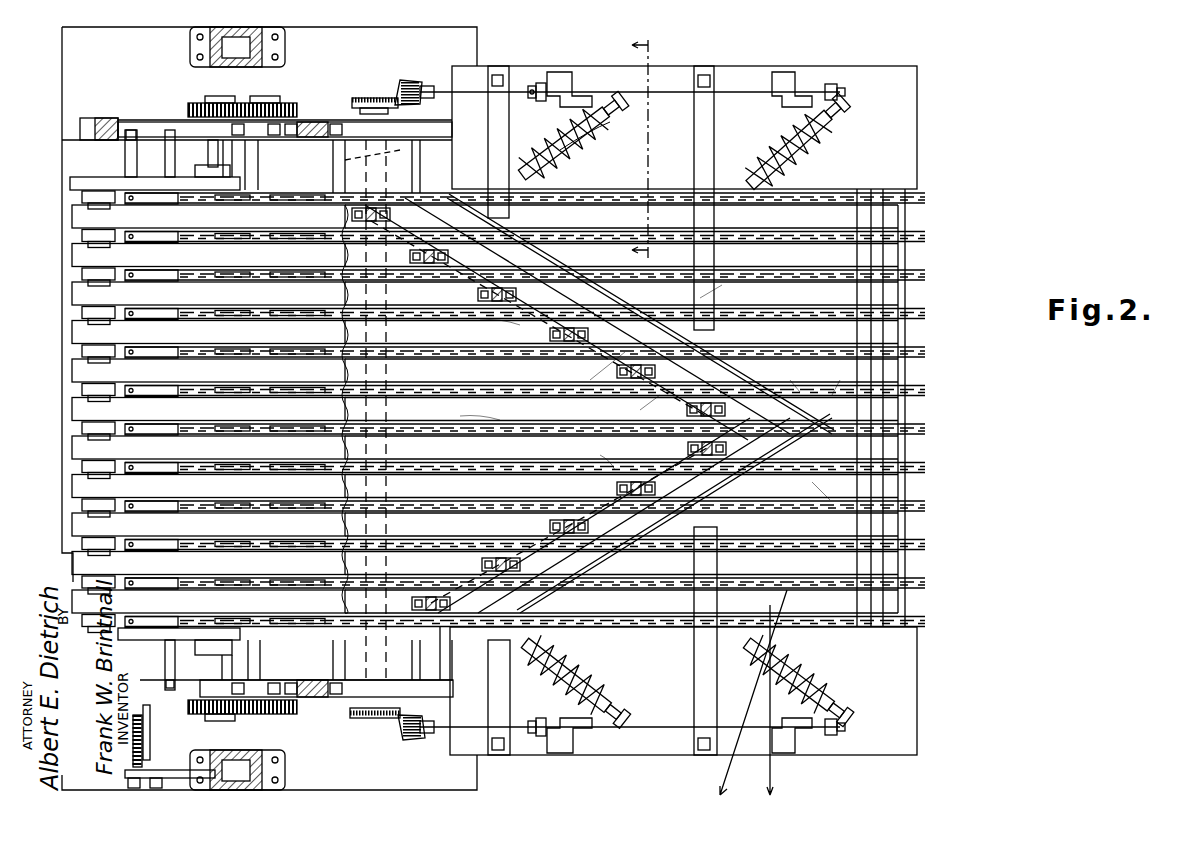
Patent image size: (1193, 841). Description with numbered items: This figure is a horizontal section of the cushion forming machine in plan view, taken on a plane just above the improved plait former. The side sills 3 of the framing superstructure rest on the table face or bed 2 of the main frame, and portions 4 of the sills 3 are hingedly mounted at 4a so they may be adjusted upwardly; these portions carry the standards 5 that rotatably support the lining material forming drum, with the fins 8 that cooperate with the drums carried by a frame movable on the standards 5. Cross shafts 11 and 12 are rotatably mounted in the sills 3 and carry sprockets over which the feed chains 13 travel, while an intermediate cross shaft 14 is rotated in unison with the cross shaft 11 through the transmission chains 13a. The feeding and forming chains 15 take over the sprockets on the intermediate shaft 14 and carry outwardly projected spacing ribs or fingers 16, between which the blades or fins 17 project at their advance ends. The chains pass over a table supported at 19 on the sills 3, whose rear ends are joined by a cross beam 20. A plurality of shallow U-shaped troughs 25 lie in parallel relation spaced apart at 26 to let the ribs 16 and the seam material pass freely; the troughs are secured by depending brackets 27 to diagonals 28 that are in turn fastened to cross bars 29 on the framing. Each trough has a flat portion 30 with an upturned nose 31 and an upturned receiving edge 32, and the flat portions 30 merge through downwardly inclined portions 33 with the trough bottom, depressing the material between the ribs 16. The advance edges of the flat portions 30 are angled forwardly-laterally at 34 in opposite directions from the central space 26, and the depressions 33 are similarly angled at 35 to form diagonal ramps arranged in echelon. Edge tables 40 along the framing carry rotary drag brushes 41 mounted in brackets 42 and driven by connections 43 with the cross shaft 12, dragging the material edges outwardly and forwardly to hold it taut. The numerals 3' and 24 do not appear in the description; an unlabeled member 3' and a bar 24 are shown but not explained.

The table face or bed 2 is at (470, 42).
The side sills 3 is at (150, 392).
The standard 3' is at (683, 295).
The portions of the sills 4 is at (410, 140).
The pivot mounting 4a is at (208, 115).
The standards 5 is at (312, 122).
The fins 8 is at (709, 408).
The cross shaft 11 is at (90, 170).
The cross shaft 12 is at (352, 160).
The feed chains 13 is at (78, 248).
The transmission chains 13a is at (80, 208).
The intermediate cross shaft 14 is at (208, 150).
The feeding and forming chains 15 is at (927, 268).
The spacing ribs or fingers 16 is at (928, 192).
The blades or fins 17 is at (210, 272).
The table support 19 is at (335, 152).
The cross beam 20 is at (440, 658).
The bars 24 is at (920, 322).
The shallow U-shaped troughs 25 is at (462, 455).
The space between troughs 26 is at (508, 345).
The depending brackets 27 is at (620, 490).
The diagonals 28 is at (465, 293).
The cross bars 29 is at (490, 158).
The flat portion 30 is at (780, 405).
The upturned nose 31 is at (822, 420).
The upturned receiving edge 32 is at (830, 455).
The downwardly inclined portions or depressions 33 is at (740, 345).
The angled advance edge 34 is at (655, 390).
The angled inclined portion 35 is at (668, 348).
The edge tables 40 is at (738, 100).
The rotary drag brushes 41 is at (598, 140).
The brackets 42 is at (570, 168).
The connections 43 is at (540, 84).